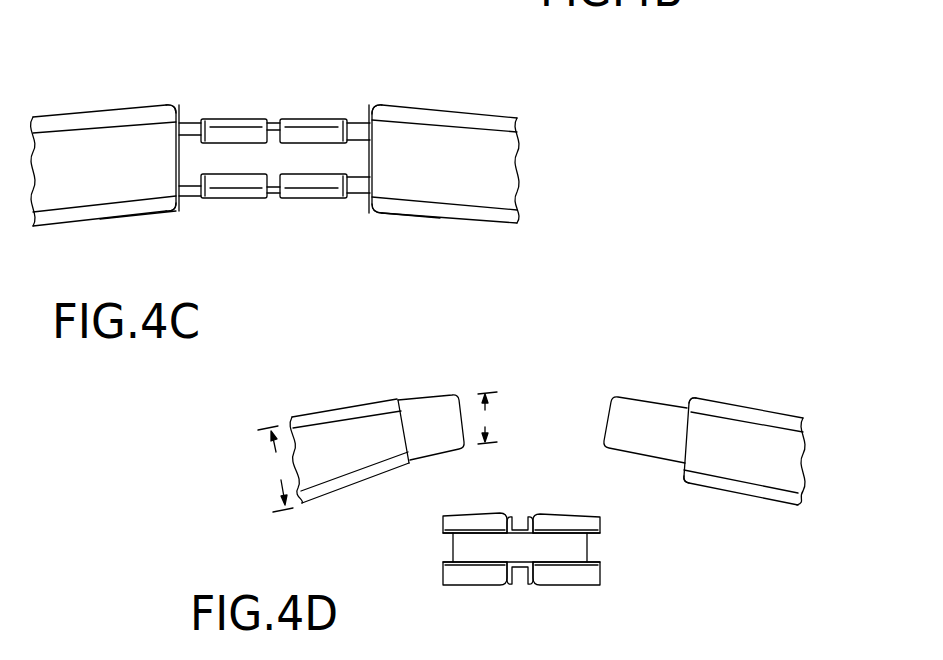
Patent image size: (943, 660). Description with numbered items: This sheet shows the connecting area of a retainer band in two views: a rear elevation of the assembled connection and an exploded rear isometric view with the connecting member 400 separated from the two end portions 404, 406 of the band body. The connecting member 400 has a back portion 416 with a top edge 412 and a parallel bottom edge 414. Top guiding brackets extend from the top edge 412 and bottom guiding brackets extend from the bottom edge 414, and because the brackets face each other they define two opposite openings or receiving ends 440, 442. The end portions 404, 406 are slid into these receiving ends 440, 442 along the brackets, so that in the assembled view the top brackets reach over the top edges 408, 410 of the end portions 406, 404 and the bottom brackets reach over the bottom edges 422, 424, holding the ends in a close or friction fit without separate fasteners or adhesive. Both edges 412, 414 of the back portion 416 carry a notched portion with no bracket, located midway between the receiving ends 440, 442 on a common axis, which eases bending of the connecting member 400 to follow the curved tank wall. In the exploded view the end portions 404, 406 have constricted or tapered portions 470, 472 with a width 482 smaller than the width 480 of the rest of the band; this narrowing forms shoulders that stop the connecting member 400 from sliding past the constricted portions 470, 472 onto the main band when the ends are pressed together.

In FIG. 4D, the connecting member 400 is at (514, 555).
In FIG. 4C, the end portion 404 is at (495, 127).
In FIG. 4D, the end portion 404 is at (783, 460).
In FIG. 4C, the end portion 406 is at (87, 123).
In FIG. 4D, the end portion 406 is at (318, 425).
In FIG. 4C, the top edge 408 is at (190, 125).
In FIG. 4D, the top edge 408 is at (443, 398).
In FIG. 4C, the top edge 410 is at (355, 117).
In FIG. 4D, the top edge 410 is at (675, 402).
In FIG. 4C, the top edge 412 is at (267, 123).
In FIG. 4D, the top edge 412 is at (555, 518).
In FIG. 4D, the bottom edge 414 is at (577, 587).
In FIG. 4D, the back portion 416 is at (467, 543).
In FIG. 4C, the bottom edge 422 is at (180, 185).
In FIG. 4D, the bottom edge 422 is at (438, 453).
In FIG. 4C, the bottom edge 424 is at (355, 197).
In FIG. 4D, the bottom edge 424 is at (632, 458).
In FIG. 4D, the receiving end 440 is at (578, 550).
In FIG. 4D, the receiving end 442 is at (453, 555).
In FIG. 4C, the constricted portion 470 is at (300, 160).
In FIG. 4D, the constricted portion 470 is at (652, 430).
In FIG. 4C, the constricted portion 472 is at (217, 160).
In FIG. 4D, the constricted portion 472 is at (423, 410).
In FIG. 4D, the width 480 is at (275, 469).
In FIG. 4D, the width 482 is at (489, 418).